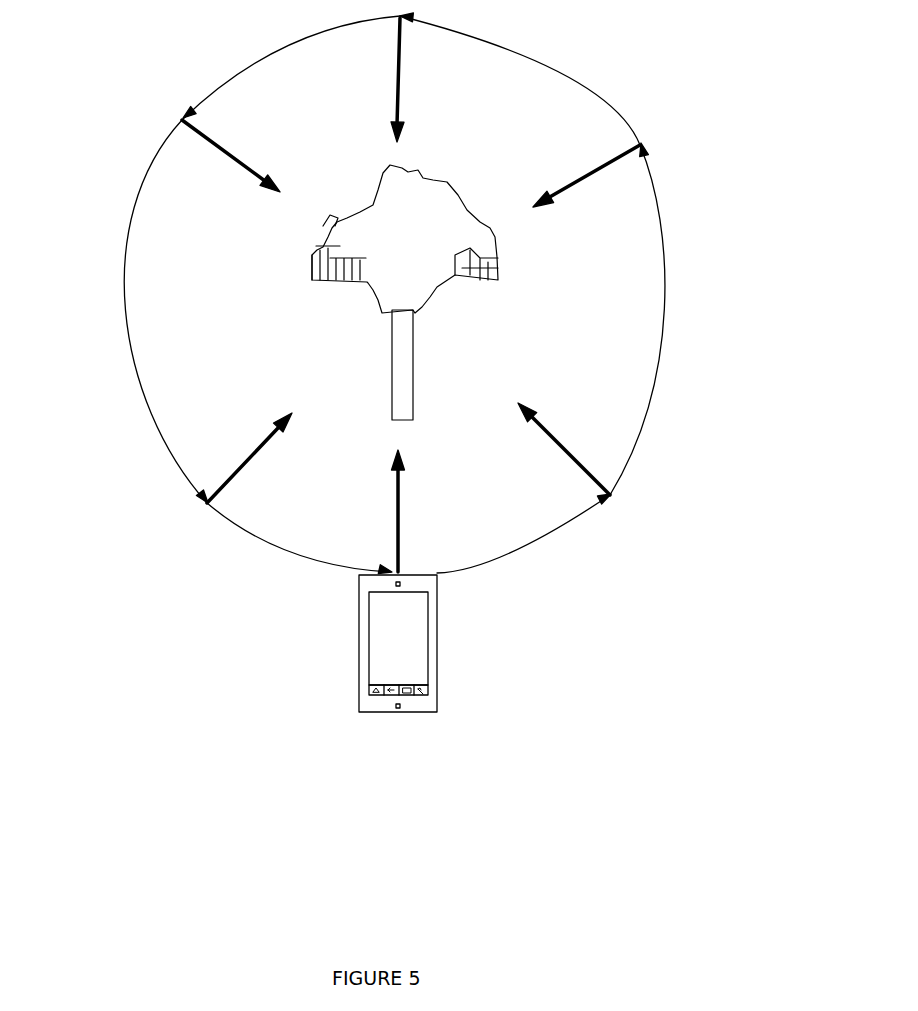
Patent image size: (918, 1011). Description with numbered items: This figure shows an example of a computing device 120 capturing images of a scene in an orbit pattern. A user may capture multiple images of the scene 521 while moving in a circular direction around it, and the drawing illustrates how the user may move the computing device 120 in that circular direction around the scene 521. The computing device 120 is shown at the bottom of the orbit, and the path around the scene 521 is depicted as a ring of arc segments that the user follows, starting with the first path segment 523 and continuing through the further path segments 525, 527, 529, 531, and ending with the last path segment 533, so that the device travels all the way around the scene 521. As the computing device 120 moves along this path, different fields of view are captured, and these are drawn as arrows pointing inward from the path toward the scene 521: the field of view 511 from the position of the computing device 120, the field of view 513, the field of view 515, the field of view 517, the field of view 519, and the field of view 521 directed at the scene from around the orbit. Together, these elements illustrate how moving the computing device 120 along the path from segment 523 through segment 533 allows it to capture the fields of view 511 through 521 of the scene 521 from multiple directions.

The computing device 120 is at (359, 641).
The field of view 511 is at (395, 502).
The field of view 513 is at (580, 460).
The field of view 515 is at (583, 177).
The field of view 517 is at (393, 71).
The field of view 519 is at (244, 178).
The scene 521 is at (244, 463).
The path 523 is at (510, 553).
The path 525 is at (668, 358).
The path 527 is at (565, 75).
The path 529 is at (285, 47).
The path 531 is at (135, 375).
The path 533 is at (292, 552).